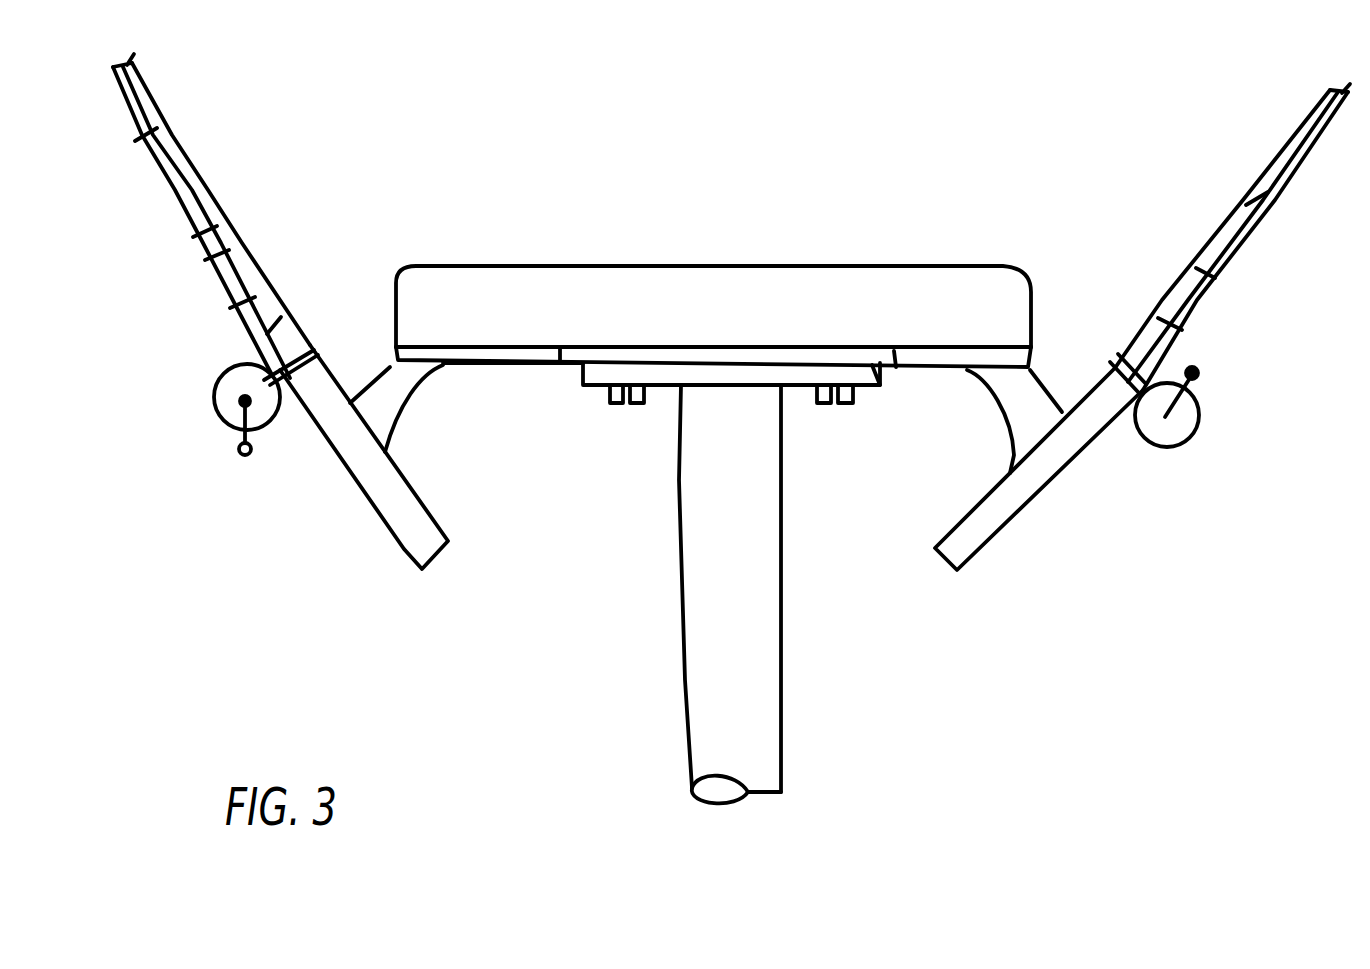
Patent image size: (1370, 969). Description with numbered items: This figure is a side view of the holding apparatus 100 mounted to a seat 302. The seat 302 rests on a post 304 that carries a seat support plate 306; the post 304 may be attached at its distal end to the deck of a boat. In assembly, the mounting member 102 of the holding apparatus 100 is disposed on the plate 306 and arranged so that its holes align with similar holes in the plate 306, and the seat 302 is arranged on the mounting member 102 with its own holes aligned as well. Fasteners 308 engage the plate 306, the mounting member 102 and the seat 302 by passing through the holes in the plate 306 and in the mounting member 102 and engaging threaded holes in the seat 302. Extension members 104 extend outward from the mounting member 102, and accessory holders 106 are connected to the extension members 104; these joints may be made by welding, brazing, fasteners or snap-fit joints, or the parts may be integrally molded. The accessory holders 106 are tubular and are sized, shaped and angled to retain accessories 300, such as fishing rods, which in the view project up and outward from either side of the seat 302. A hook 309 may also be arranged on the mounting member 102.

The holding apparatus 100 is at (1032, 368).
The mounting member 102 is at (906, 350).
The extension members 104 is at (388, 368).
The accessory holders 106 is at (402, 550).
The accessories 300 is at (222, 264).
The seat 302 is at (1003, 265).
The post 304 is at (783, 570).
The seat support plate 306 is at (880, 380).
The fasteners 308 is at (613, 400).
The hook 309 is at (492, 378).